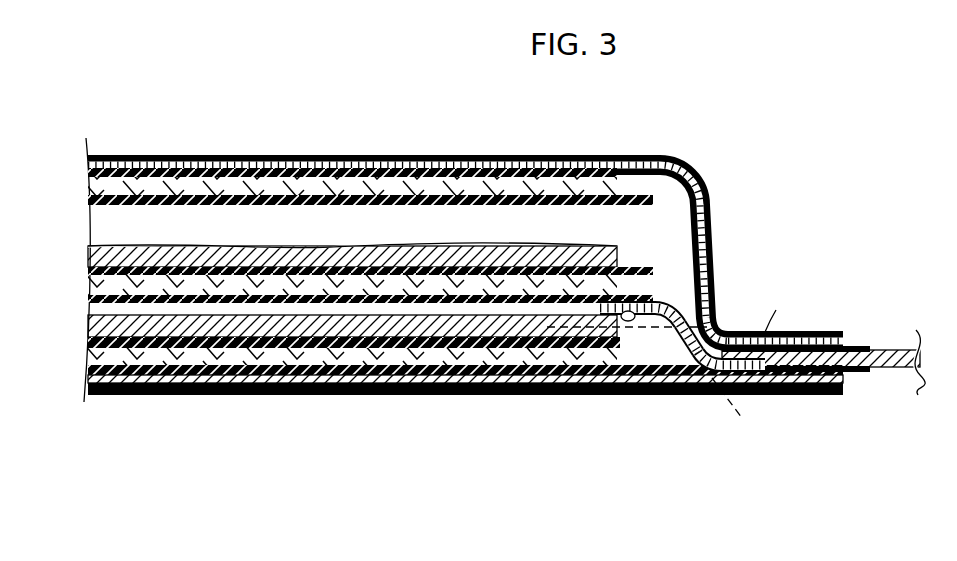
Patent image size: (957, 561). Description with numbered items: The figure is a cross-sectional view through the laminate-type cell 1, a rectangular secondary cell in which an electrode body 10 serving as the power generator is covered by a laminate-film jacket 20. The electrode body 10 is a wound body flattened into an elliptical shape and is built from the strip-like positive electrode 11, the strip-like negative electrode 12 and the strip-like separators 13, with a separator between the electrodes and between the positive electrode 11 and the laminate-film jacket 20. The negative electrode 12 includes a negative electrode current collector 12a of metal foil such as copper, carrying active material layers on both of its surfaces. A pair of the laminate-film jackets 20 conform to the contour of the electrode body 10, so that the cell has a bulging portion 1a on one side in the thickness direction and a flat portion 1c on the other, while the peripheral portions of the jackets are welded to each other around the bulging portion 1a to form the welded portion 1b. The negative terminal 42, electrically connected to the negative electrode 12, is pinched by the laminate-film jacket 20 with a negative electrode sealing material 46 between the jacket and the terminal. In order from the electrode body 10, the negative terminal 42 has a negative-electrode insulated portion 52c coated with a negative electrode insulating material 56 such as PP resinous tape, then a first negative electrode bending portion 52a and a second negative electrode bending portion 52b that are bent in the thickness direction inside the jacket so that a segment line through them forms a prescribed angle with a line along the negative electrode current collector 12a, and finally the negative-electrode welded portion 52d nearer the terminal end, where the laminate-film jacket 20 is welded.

The laminate-type cell 1 is at (827, 125).
The bulging portion 1a is at (248, 153).
The welded portion 1b is at (810, 392).
The flat portion 1c is at (483, 392).
The electrode body 10 is at (650, 195).
The positive electrode 11 is at (427, 187).
The negative electrode 12 is at (392, 330).
The negative electrode current collector 12a is at (547, 328).
The separator 13 is at (333, 193).
The laminate-film jacket 20 is at (700, 193).
The negative terminal 42 is at (863, 372).
The negative electrode sealing material 46 is at (850, 346).
The first negative electrode bending portion 52a is at (662, 300).
The second negative electrode bending portion 52b is at (690, 356).
The negative-electrode insulated portion 52c is at (660, 330).
The negative-electrode welded portion 52d is at (765, 392).
The negative electrode insulating material 56 is at (628, 325).